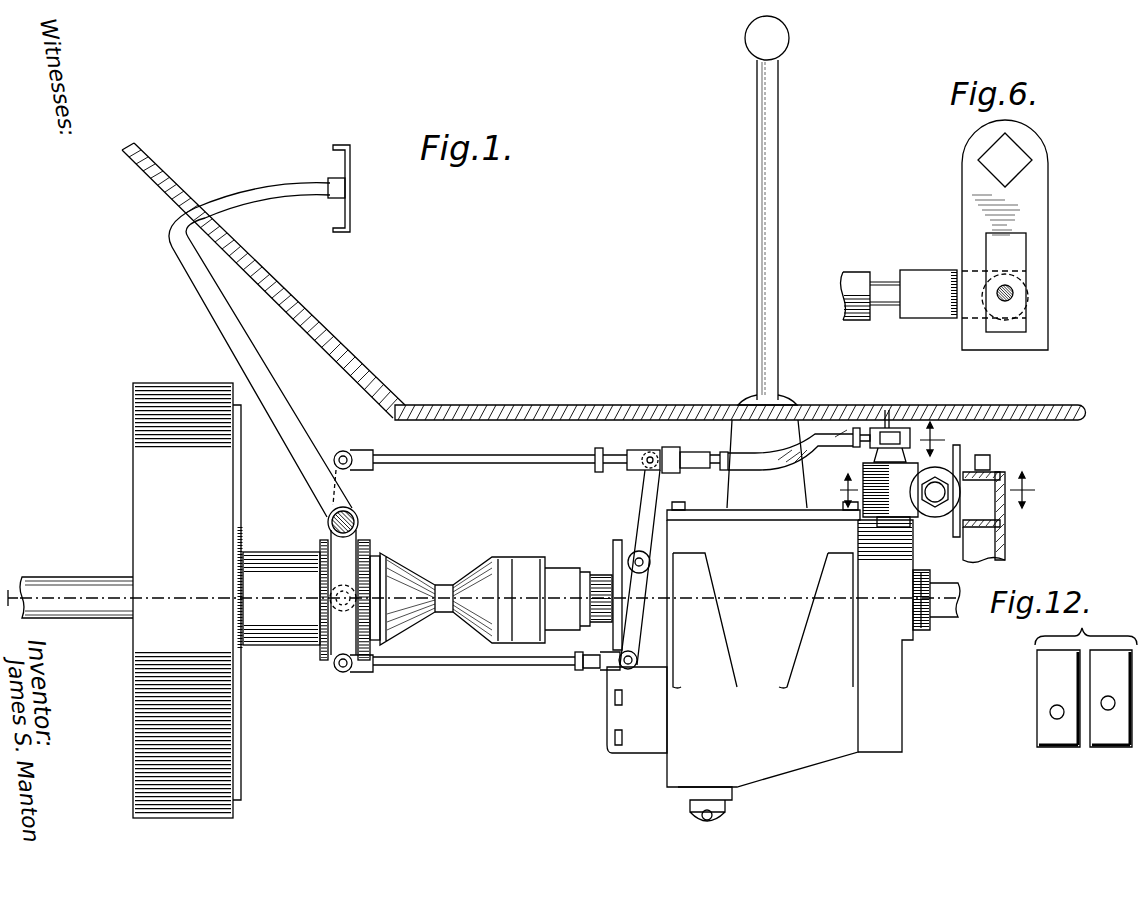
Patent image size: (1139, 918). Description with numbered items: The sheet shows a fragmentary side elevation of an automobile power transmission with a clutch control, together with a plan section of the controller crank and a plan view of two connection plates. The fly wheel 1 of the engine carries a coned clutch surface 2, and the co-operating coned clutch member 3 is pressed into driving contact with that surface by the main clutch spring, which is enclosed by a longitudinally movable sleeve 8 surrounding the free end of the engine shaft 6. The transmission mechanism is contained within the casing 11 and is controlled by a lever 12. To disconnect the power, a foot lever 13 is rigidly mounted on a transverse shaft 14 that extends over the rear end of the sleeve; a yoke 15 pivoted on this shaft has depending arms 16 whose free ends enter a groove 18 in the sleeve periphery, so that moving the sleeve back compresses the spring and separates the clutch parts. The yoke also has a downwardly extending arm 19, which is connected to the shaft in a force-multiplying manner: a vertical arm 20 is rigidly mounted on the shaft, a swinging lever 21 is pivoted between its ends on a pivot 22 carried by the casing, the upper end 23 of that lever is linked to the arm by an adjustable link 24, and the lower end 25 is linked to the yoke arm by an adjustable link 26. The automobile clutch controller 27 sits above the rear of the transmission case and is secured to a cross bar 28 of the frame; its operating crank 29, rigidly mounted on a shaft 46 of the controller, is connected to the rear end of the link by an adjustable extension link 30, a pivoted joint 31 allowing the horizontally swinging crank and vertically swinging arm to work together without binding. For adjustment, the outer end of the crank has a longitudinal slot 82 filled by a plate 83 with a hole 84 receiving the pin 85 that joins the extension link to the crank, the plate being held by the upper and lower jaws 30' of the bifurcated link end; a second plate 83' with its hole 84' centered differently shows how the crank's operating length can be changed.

In FIG. 1, the fly wheel 1 is at (168, 405).
In FIG. 1, the coned clutch surface 2 is at (496, 599).
In FIG. 1, the coned clutch member 3 is at (604, 325).
In FIG. 1, the engine shaft 6 is at (92, 595).
In FIG. 1, the sleeve 8 is at (278, 566).
In FIG. 1, the casing 11 is at (800, 737).
In FIG. 1, the lever 12 is at (765, 268).
In FIG. 1, the foot lever 13 is at (292, 426).
In FIG. 1, the transverse shaft 14 is at (328, 522).
In FIG. 1, the yoke 15 is at (356, 548).
In FIG. 1, the depending arms 16 is at (360, 576).
In FIG. 1, the groove 18 is at (332, 642).
In FIG. 1, the downwardly extending arm 19 is at (342, 648).
In FIG. 1, the vertical arm 20 is at (352, 486).
In FIG. 1, the swinging lever 21 is at (642, 538).
In FIG. 1, the pivot 22 is at (632, 560).
In FIG. 1, the upper end of lever 23 is at (650, 495).
In FIG. 1, the adjustable link 24 is at (496, 452).
In FIG. 1, the lower end of lever 25 is at (615, 655).
In FIG. 1, the adjustable link 26 is at (489, 665).
In FIG. 1, the automobile clutch controller 27 is at (917, 525).
In FIG. 1, the cross bar 28 is at (1003, 505).
In FIG. 1, the operating crank 29 is at (896, 428).
In FIG. 6, the operating crank 29 is at (1043, 212).
In FIG. 1, the adjustable extension link 30 is at (799, 465).
In FIG. 6, the adjustable extension link 30 is at (855, 311).
In FIG. 1, the jaws 30' is at (883, 404).
In FIG. 6, the jaws 30' is at (928, 312).
In FIG. 1, the pivoted joint 31 is at (690, 470).
In FIG. 6, the shaft 46 is at (1010, 168).
In FIG. 6, the slot 82 is at (1028, 243).
In FIG. 6, the plate 83 is at (977, 272).
In FIG. 12, the plate 83 is at (1036, 698).
In FIG. 12, the plate 83' is at (1093, 720).
In FIG. 6, the hole 84 is at (1043, 272).
In FIG. 12, the hole 84 is at (1027, 717).
In FIG. 12, the hole 84' is at (1115, 749).
In FIG. 6, the pin 85 is at (1012, 300).